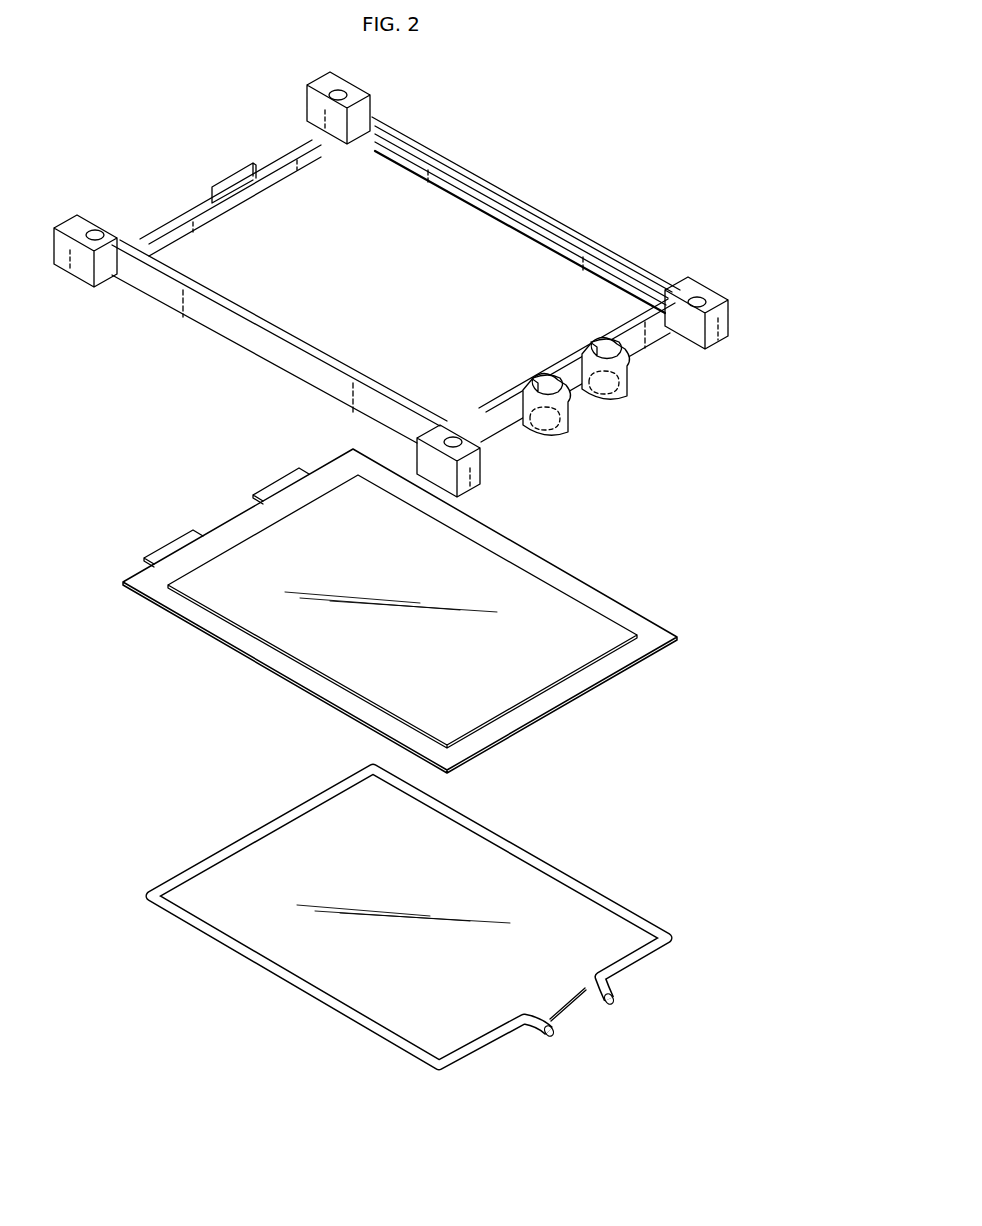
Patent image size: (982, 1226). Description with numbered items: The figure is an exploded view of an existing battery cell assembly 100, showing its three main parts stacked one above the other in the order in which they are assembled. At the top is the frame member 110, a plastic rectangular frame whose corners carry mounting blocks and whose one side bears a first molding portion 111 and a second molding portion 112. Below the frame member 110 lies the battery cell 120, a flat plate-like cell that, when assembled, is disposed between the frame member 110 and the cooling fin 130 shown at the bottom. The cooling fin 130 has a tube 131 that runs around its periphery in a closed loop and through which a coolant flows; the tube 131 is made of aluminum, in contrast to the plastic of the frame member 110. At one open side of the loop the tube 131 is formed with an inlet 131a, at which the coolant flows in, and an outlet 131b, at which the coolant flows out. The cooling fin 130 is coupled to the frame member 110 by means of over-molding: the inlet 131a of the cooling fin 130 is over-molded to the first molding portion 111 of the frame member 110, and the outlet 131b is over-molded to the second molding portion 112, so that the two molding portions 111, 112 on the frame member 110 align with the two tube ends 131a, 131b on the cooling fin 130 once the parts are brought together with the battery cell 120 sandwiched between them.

The battery module 100 is at (528, 158).
The frame member 110 is at (633, 267).
The first molding portion 111 is at (570, 420).
The second molding portion 112 is at (632, 383).
The battery cell 120 is at (562, 607).
The cooling fin 130 is at (522, 880).
The tube 131 is at (600, 892).
The inlet 131a is at (563, 1042).
The outlet 131b is at (622, 1008).